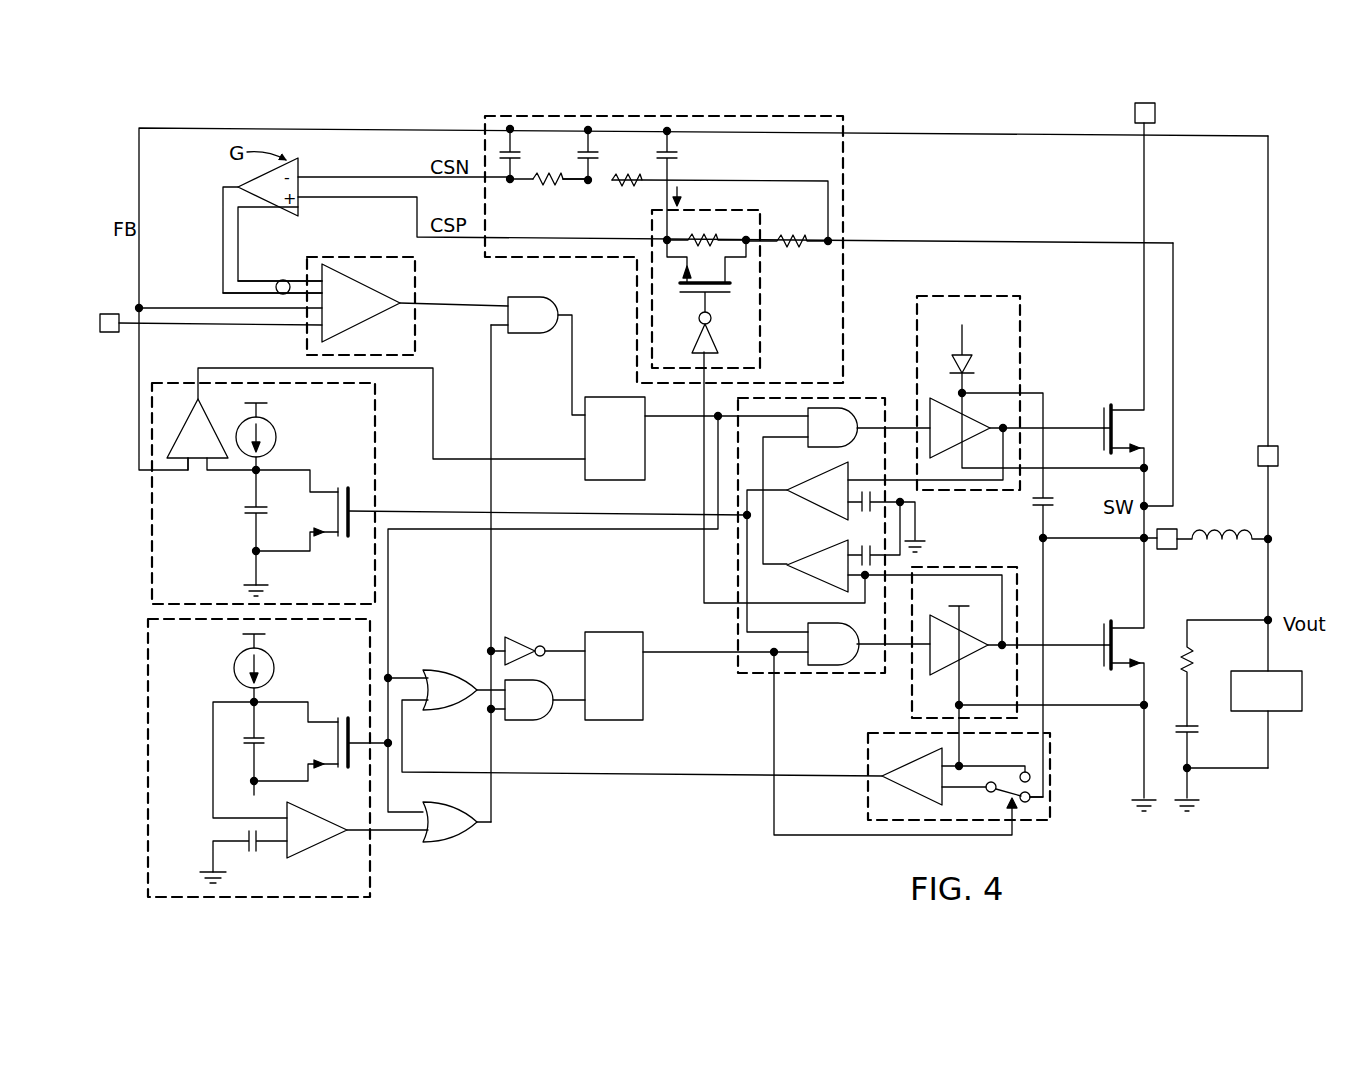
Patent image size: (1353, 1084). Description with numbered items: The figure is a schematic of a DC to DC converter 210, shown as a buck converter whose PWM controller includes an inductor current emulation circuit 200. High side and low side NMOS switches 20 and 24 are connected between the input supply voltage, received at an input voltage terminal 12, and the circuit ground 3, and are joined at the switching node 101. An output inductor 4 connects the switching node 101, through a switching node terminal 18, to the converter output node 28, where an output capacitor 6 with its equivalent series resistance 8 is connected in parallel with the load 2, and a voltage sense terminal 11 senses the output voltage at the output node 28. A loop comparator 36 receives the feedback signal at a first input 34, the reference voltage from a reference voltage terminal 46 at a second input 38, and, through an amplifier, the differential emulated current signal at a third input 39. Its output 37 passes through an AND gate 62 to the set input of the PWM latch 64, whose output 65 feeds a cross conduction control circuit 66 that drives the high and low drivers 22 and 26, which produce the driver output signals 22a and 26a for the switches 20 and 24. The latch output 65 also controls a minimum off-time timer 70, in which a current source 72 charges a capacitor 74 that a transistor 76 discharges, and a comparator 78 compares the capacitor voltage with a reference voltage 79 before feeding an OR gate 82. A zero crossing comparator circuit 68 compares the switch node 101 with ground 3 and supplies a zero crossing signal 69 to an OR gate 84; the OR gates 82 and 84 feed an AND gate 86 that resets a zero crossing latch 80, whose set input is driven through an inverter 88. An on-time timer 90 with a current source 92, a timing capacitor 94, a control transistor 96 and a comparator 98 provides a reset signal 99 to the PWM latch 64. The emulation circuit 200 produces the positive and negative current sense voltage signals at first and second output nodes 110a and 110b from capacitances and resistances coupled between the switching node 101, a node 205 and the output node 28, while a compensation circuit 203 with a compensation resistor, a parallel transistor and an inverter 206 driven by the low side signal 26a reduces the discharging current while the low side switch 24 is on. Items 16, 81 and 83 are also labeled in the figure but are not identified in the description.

The load 2 is at (1285, 712).
The circuit ground 3 is at (927, 542).
The output inductor 4 is at (1217, 528).
The output capacitor 6 is at (1200, 733).
The equivalent series resistance 8 is at (1195, 662).
The output voltage sense terminal 11 is at (1272, 446).
The input voltage terminal 12 is at (1156, 116).
The bootstrap capacitor 16 is at (1032, 504).
The switching node terminal 18 is at (1166, 550).
The high side switch 20 is at (1100, 443).
The high driver circuit 22 is at (1022, 372).
The high side driver output signal 22a is at (1070, 427).
The low side switch 24 is at (1100, 637).
The low driver circuit 26 is at (910, 692).
The low side driver output signal 26a is at (1065, 652).
The converter output node 28 is at (1262, 545).
The first comparator input 34 is at (203, 308).
The loop comparator 36 is at (418, 283).
The loop comparator output 37 is at (477, 307).
The second comparator input 38 is at (178, 326).
The third comparator input 39 is at (283, 287).
The reference voltage terminal 46 is at (108, 314).
The AND gate 62 is at (530, 345).
The PWM latch 64 is at (613, 397).
The modulated output signal 65 is at (685, 420).
The cross conduction control circuit 66 is at (858, 395).
The zero crossing comparator circuit 68 is at (1052, 774).
The zero crossing signal 69 is at (588, 775).
The minimum off-time timer circuit 70 is at (238, 758).
The current source 72 is at (235, 668).
The off-time timer capacitor 74 is at (268, 738).
The NMOS transistor 76 is at (350, 716).
The comparator 78 is at (325, 845).
The reference voltage 79 is at (253, 853).
The zero crossing latch 80 is at (612, 632).
The off timer output line 81 is at (405, 833).
The OR gate 82 is at (438, 845).
The zero cross latch output line 83 is at (683, 656).
The OR gate 84 is at (437, 712).
The AND gate 86 is at (520, 722).
The inverter 88 is at (523, 639).
The on-time timer circuit 90 is at (416, 493).
The current source 92 is at (238, 428).
The timing capacitor 94 is at (243, 510).
The control transistor 96 is at (354, 538).
The comparator 98 is at (172, 430).
The output signal 99 is at (548, 460).
The switching node 101 is at (930, 240).
The first emulation circuit output node 110a is at (340, 199).
The second emulation circuit output node 110b is at (397, 182).
The inductor current emulation circuit 200 is at (848, 180).
The compensation circuit 203 is at (764, 290).
The node 205 is at (578, 185).
The inverter 206 is at (718, 340).
The DC to DC converter 210 is at (124, 150).